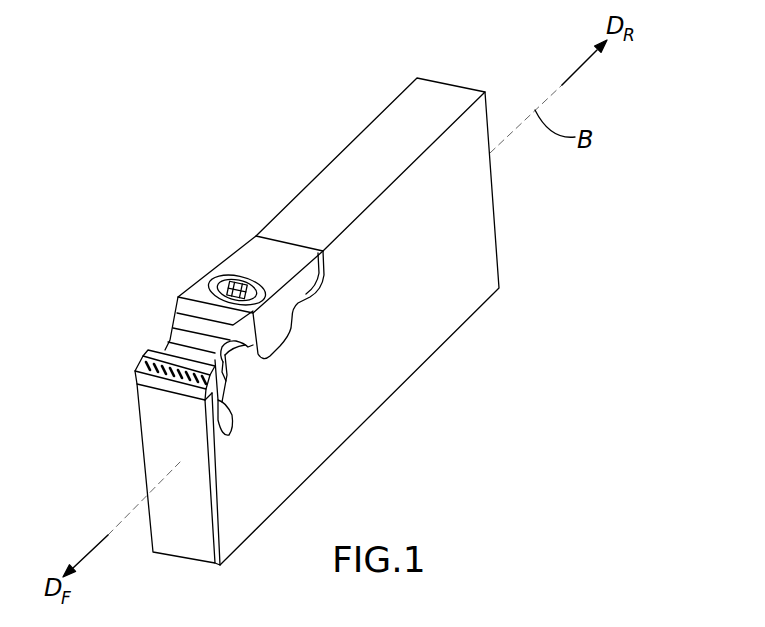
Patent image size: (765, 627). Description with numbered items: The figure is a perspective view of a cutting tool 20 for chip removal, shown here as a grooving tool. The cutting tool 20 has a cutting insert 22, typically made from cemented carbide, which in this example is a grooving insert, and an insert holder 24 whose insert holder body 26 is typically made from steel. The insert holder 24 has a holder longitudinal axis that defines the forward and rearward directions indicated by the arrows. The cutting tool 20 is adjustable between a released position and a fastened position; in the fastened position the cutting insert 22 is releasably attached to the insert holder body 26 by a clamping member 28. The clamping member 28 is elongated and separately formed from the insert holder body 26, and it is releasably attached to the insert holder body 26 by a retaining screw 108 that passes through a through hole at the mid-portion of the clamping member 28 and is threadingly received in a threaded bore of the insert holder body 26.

The cutting tool 20 is at (166, 168).
The cutting insert 22 is at (130, 351).
The insert holder 24 is at (527, 191).
The insert holder body 26 is at (452, 252).
The clamping member 28 is at (250, 254).
The retaining screw 108 is at (212, 283).